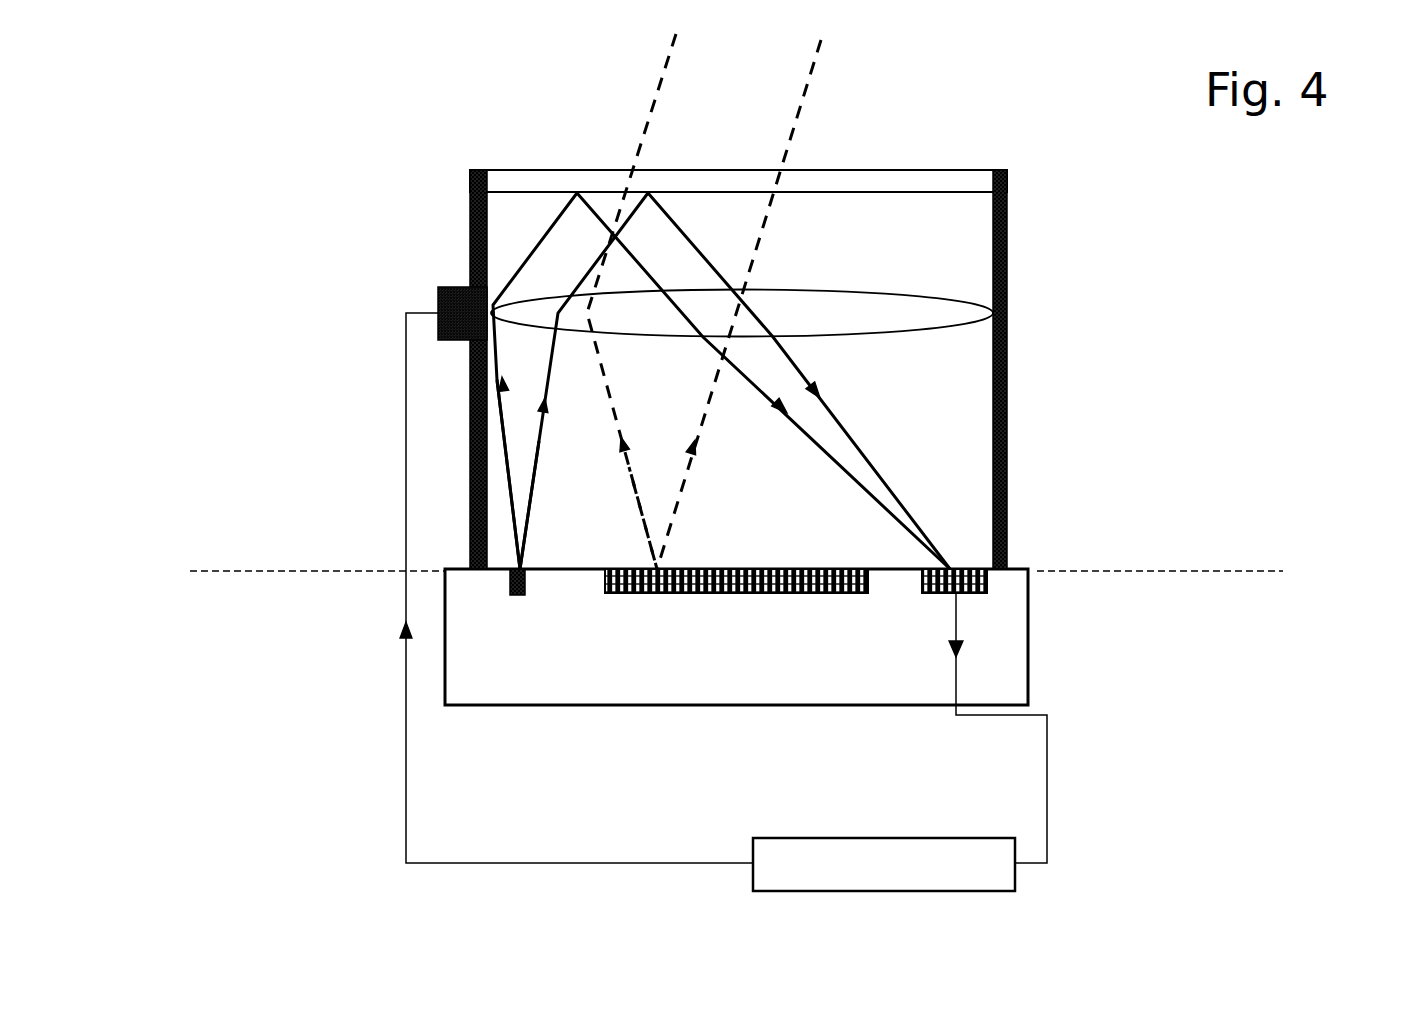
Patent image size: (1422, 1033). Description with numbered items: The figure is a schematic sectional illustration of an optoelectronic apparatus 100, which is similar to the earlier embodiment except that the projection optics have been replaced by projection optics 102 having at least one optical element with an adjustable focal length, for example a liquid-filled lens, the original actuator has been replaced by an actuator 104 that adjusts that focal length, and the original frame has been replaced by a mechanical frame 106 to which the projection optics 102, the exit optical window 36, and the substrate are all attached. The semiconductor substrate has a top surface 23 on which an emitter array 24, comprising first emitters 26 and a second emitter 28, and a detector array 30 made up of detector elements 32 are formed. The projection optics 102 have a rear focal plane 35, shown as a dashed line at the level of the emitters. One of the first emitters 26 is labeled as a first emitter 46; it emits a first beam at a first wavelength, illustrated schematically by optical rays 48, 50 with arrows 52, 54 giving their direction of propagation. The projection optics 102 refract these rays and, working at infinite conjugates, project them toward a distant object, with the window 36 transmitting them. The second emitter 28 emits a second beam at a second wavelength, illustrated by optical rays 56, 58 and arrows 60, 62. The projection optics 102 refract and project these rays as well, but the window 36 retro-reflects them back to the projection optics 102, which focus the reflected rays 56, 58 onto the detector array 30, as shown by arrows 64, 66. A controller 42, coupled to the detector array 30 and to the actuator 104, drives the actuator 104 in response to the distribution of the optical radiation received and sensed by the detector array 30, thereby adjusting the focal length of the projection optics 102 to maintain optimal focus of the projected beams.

The optoelectronic apparatus 100 is at (165, 206).
The top surface 23 is at (472, 577).
The emitter array 24 is at (705, 595).
The first emitters 26 is at (800, 570).
The second emitter 28 is at (513, 593).
The detector array 30 is at (935, 593).
The detector elements 32 is at (962, 569).
The rear focal plane 35 is at (1233, 568).
The exit optical window 36 is at (893, 182).
The controller 42 is at (988, 862).
The first emitter 46 is at (637, 595).
The optical ray 48 is at (640, 508).
The optical ray 50 is at (683, 487).
The arrow 52 is at (623, 457).
The arrow 54 is at (697, 448).
The optical ray 56 is at (505, 452).
The optical ray 58 is at (530, 500).
The arrow 60 is at (498, 392).
The arrow 62 is at (545, 420).
The arrow 64 is at (777, 405).
The arrow 66 is at (810, 382).
The projection optics 102 is at (952, 312).
The actuator 104 is at (463, 317).
The mechanical frame 106 is at (477, 233).